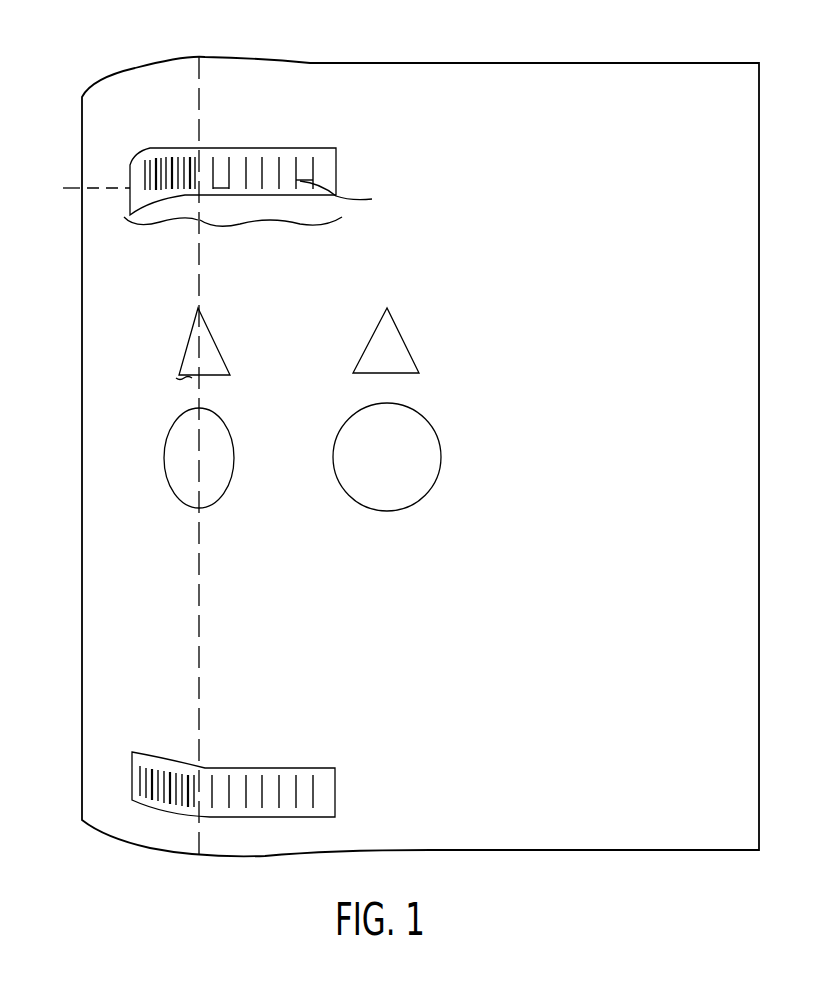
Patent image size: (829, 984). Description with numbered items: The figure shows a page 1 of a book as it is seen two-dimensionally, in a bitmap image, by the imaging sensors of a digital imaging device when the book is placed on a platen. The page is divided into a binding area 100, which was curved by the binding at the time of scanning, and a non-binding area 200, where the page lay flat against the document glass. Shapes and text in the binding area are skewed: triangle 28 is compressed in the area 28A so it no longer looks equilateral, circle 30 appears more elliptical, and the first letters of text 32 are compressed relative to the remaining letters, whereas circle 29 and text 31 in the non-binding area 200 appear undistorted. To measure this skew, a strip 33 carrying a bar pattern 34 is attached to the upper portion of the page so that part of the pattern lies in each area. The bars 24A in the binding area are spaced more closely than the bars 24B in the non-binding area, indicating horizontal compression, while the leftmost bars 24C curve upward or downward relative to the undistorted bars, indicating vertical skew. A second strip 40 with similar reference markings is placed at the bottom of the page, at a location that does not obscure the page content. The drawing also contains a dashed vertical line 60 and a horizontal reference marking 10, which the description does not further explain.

The page 1 is at (648, 62).
The reference line 10 is at (75, 188).
The bars in the binding area 24A is at (161, 238).
The bars in the non-binding area 24B is at (271, 238).
The leftmost bars 24C is at (143, 171).
The triangle 28 is at (217, 335).
The compressed area 28A is at (173, 392).
The circle 29 is at (402, 332).
The circle 30 is at (233, 440).
The text 31 is at (427, 575).
The text 32 is at (228, 580).
The strip 33 is at (338, 170).
The bar pattern 34 is at (349, 198).
The strip 40 is at (338, 785).
The dividing line 60 is at (200, 673).
The binding area 100 is at (120, 711).
The non-binding area 200 is at (308, 711).